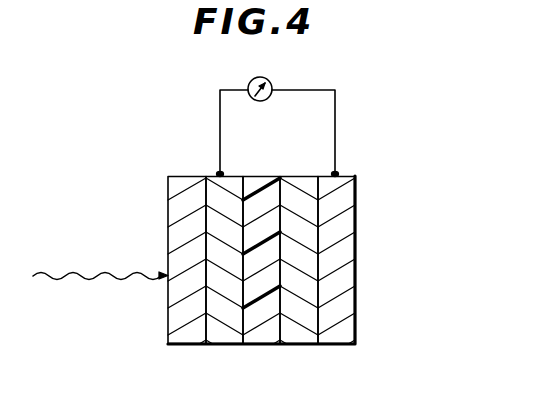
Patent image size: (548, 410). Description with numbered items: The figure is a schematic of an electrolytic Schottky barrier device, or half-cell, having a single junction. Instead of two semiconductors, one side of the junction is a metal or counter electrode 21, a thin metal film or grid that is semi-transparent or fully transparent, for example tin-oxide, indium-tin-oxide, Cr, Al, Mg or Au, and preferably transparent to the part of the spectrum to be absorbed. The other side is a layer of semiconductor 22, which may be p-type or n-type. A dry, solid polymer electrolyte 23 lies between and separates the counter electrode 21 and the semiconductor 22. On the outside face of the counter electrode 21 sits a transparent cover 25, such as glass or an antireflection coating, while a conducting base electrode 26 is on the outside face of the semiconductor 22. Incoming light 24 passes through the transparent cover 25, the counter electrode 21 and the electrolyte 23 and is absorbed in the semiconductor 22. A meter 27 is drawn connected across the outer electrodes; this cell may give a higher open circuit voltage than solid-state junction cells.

The counter electrode 21 is at (232, 335).
The semiconductor 22 is at (305, 335).
The solid polymer electrolyte 23 is at (264, 335).
The light 24 is at (61, 282).
The transparent cover 25 is at (197, 338).
The conducting base electrode 26 is at (343, 335).
The current meter 27 is at (258, 102).